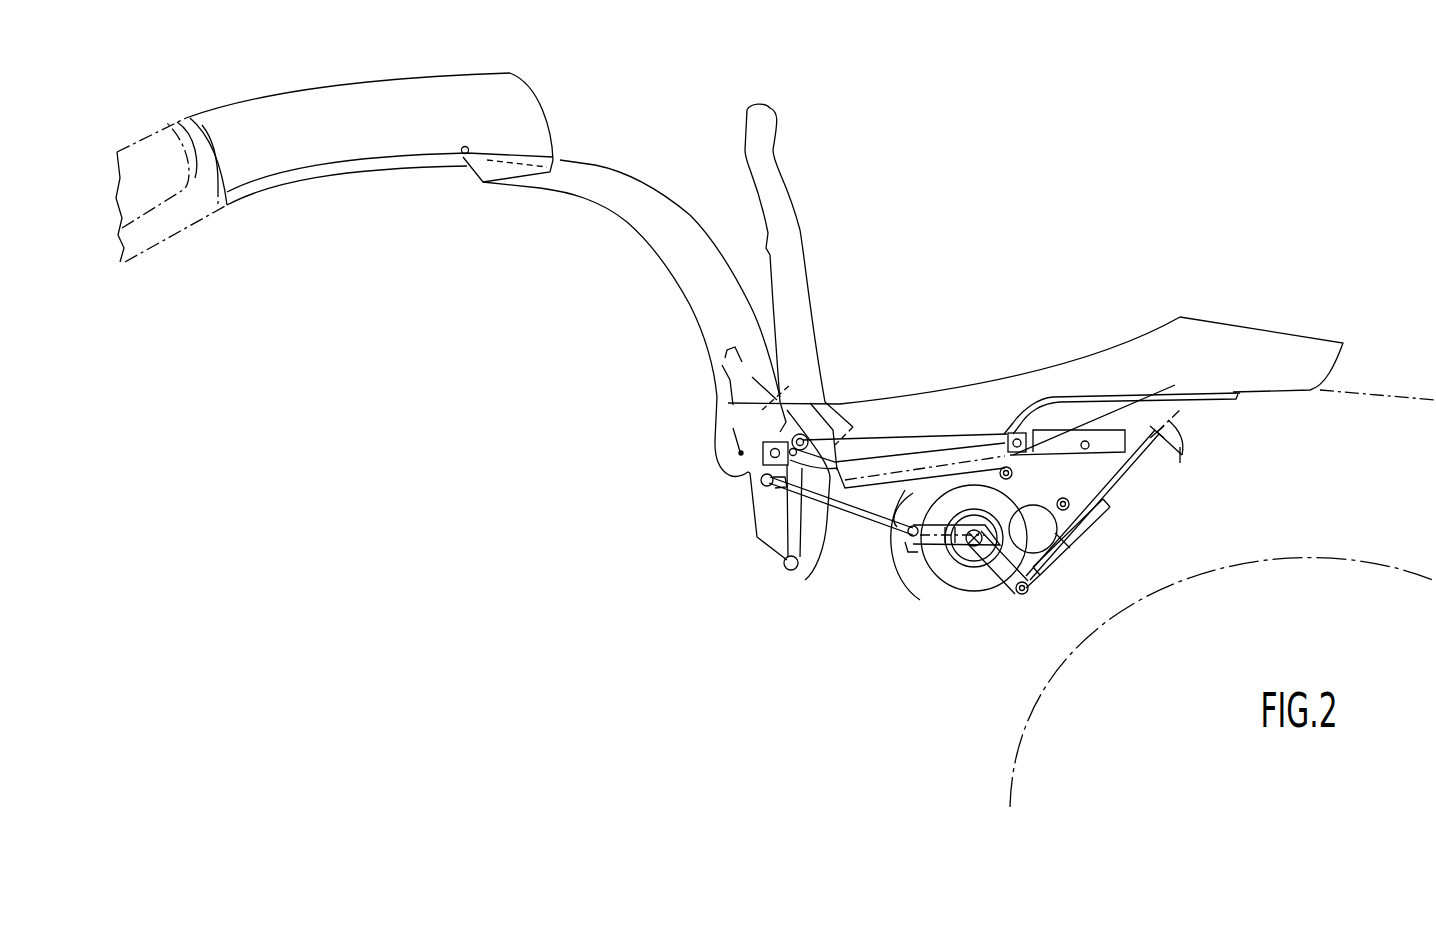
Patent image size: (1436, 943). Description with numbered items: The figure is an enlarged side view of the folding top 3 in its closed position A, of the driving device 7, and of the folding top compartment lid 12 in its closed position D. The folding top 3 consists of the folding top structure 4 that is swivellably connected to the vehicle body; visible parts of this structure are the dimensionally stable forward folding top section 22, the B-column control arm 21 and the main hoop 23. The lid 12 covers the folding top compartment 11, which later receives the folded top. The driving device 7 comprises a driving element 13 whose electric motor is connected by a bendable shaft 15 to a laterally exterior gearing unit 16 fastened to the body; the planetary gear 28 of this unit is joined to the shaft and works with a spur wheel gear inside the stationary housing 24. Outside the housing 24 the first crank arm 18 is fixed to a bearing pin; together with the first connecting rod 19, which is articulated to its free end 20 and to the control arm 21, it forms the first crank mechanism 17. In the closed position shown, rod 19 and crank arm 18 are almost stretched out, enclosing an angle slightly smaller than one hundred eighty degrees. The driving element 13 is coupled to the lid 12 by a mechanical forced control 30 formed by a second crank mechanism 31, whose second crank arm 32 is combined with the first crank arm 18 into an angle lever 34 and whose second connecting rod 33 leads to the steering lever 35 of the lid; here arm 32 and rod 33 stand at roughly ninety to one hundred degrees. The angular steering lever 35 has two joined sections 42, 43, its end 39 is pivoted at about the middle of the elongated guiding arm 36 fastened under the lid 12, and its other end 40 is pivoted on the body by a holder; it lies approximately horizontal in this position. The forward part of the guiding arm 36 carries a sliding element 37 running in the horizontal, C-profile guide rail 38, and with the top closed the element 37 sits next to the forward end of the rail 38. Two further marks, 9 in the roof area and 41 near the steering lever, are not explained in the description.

The folding top 3 is at (295, 86).
The closed position A is at (405, 80).
The forward folding top section 22 is at (526, 82).
The window frame 9 is at (180, 120).
The folding top structure 4 is at (638, 236).
The control arm 21 is at (723, 306).
The main hoop 23 is at (800, 207).
The driving device 7 is at (910, 627).
The sliding element 37 is at (768, 436).
The folding top compartment lid 12 is at (1033, 372).
The guide rail 38 is at (927, 428).
The guiding arm 36 is at (884, 453).
The end of steering lever 39 is at (1015, 431).
The closed position D is at (1281, 322).
The section of steering lever 42 is at (1102, 428).
The steering lever 35 is at (1137, 423).
The pivot axis 41 is at (1175, 418).
The section of steering lever 43 is at (1200, 423).
The other end of steering lever 40 is at (1186, 454).
The second connecting rod 33 is at (1132, 478).
The bendable shaft 15 is at (1108, 505).
The second crank mechanism 31 is at (1052, 566).
The second crank arm 32 is at (1006, 596).
The mechanical forced control 30 is at (1045, 584).
The planetary gear 28 is at (1044, 509).
The folding top compartment 11 is at (1200, 546).
The gearing unit 16 is at (972, 603).
The angle lever 34 is at (971, 508).
The first crank arm 18 is at (931, 567).
The housing 24 is at (983, 590).
The free end of first crank arm 20 is at (925, 563).
The first crank mechanism 17 is at (891, 531).
The first connecting rod 19 is at (811, 570).
The driving element 13 is at (903, 551).